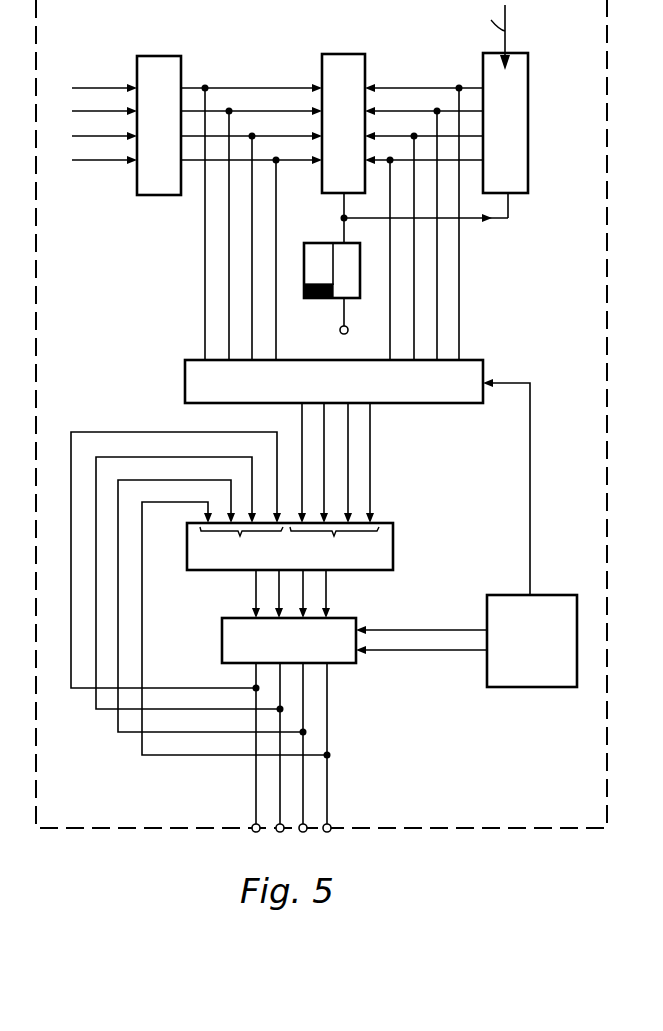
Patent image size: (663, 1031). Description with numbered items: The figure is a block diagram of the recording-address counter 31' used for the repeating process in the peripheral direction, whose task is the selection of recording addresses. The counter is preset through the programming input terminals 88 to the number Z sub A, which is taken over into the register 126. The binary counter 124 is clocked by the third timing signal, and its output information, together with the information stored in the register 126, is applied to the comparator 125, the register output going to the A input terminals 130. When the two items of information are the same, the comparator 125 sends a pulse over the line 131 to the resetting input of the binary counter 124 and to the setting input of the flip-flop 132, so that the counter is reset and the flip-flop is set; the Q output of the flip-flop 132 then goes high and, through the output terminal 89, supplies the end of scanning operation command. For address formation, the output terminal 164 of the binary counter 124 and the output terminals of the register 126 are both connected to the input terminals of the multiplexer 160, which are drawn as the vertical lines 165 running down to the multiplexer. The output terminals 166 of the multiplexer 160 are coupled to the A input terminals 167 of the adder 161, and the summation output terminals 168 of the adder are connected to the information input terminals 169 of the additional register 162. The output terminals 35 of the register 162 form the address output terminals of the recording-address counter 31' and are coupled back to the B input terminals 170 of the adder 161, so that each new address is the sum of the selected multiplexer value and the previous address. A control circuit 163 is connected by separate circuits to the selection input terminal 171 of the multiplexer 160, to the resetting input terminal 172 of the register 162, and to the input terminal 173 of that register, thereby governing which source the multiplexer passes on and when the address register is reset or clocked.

The recording-address counter 31' is at (303, 414).
The output terminals 35 is at (295, 820).
The programming input terminals 88 is at (98, 123).
The output terminal 89 is at (340, 330).
The binary counter 124 is at (522, 85).
The comparator 125 is at (330, 77).
The register 126 is at (158, 73).
The A input terminals 130 is at (184, 123).
The line 131 is at (492, 220).
The flip-flop 132 is at (325, 252).
The multiplexer 160 is at (197, 382).
The adder 161 is at (380, 553).
The additional register 162 is at (232, 650).
The control circuit 163 is at (505, 667).
The output terminal 164 is at (478, 125).
The data lines 165 is at (240, 357).
The output terminals 166 is at (335, 412).
The A input terminals 167 is at (337, 517).
The summation output terminals 168 is at (290, 575).
The information input terminals 169 is at (290, 612).
The B input terminals 170 is at (243, 517).
The selection input terminal 171 is at (489, 380).
The resetting input terminal 172 is at (362, 626).
The input terminal 173 is at (362, 654).